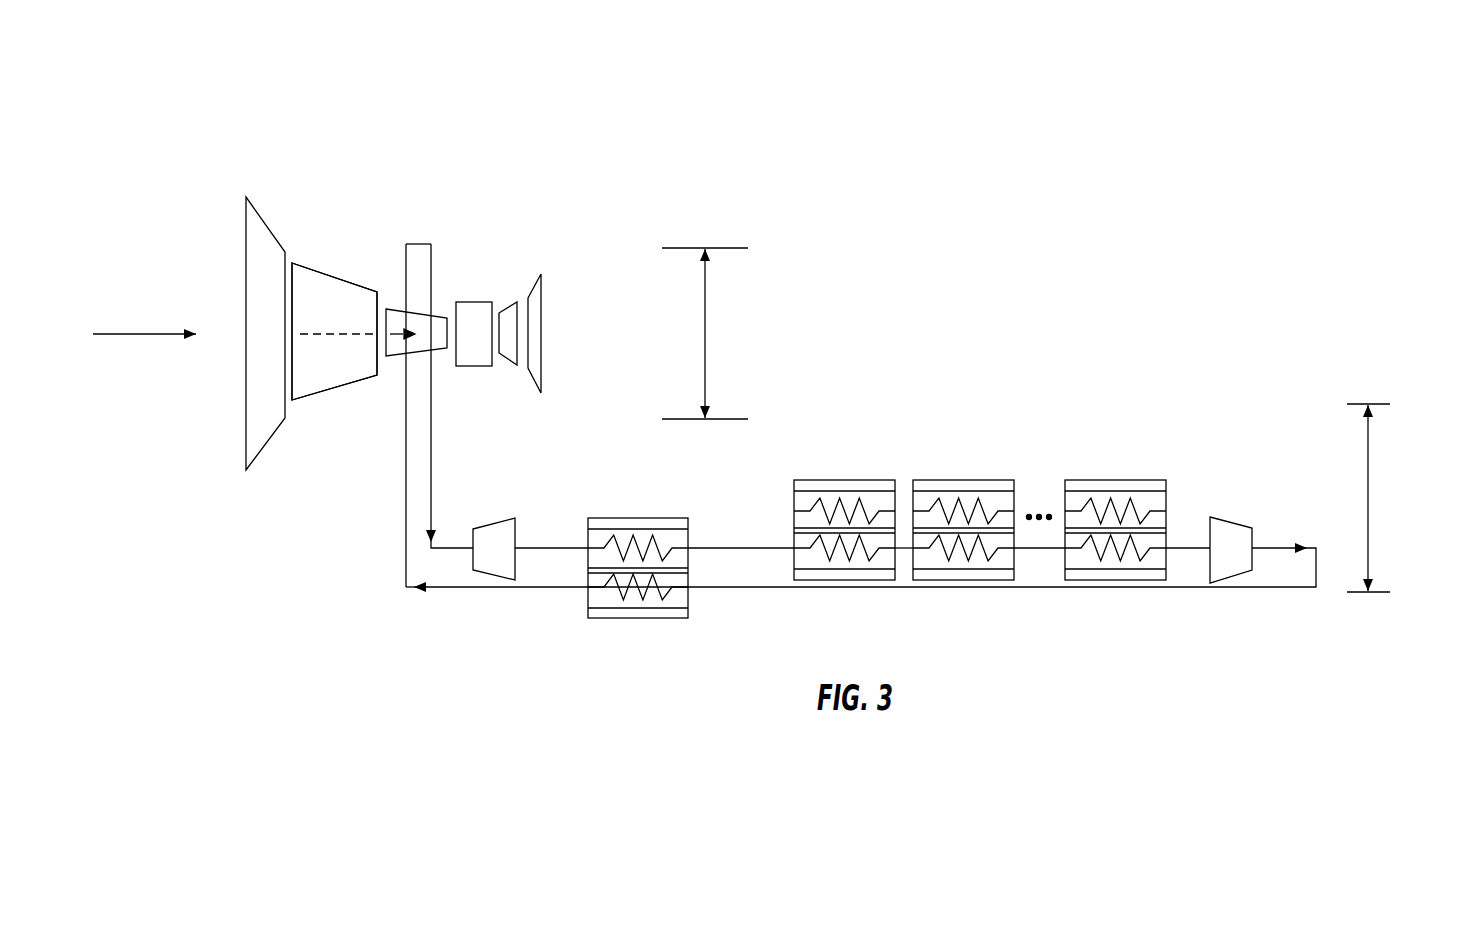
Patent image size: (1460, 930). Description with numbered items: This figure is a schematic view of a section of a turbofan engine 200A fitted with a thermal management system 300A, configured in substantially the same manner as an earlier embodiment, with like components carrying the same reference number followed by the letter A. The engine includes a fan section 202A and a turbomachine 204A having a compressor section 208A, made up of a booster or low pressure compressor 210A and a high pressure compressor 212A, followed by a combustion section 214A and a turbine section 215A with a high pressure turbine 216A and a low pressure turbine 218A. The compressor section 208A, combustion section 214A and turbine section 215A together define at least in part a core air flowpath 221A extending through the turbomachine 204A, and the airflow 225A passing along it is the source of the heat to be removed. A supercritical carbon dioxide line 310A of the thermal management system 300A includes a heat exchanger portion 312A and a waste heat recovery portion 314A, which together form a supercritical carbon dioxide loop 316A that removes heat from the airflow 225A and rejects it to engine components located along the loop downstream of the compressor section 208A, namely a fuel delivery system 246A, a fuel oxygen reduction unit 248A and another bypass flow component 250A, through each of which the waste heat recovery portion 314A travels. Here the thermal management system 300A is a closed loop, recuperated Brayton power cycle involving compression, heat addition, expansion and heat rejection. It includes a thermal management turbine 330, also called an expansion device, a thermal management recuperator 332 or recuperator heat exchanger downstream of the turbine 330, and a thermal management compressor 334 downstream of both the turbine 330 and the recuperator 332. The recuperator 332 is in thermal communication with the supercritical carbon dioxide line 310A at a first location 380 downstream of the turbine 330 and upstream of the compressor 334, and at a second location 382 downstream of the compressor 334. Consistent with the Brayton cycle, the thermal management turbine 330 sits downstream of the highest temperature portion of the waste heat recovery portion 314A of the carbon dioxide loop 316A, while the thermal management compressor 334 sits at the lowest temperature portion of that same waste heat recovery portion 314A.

The turbofan engine 200A is at (654, 78).
The turbomachine 204A is at (439, 125).
The compressor section 208A is at (368, 248).
The fan section 202A is at (246, 300).
The core air flowpath 221A is at (122, 334).
The airflow 225A is at (338, 333).
The low pressure compressor 210A is at (332, 392).
The high pressure compressor 212A is at (392, 357).
The combustion section 214A is at (473, 367).
The turbine section 215A is at (556, 238).
The high pressure turbine 216A is at (508, 308).
The low pressure turbine 218A is at (542, 339).
The supercritical carbon dioxide line 310A is at (432, 268).
The heat exchanger portion 312A is at (705, 330).
The waste heat recovery portion 314A is at (1368, 495).
The thermal management system 300A is at (1180, 388).
The supercritical carbon dioxide loop 316A is at (356, 640).
The thermal management turbine 330 is at (503, 518).
The thermal management recuperator 332 is at (663, 567).
The first location 380 is at (662, 546).
The second location 382 is at (610, 597).
The fuel delivery system 246A is at (853, 480).
The fuel oxygen reduction unit 248A is at (983, 480).
The other bypass flow component 250A is at (1115, 479).
The thermal management compressor 334 is at (1243, 518).